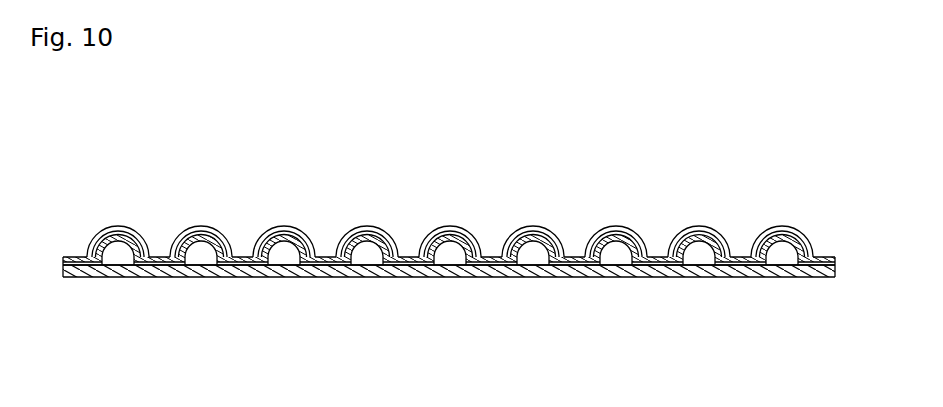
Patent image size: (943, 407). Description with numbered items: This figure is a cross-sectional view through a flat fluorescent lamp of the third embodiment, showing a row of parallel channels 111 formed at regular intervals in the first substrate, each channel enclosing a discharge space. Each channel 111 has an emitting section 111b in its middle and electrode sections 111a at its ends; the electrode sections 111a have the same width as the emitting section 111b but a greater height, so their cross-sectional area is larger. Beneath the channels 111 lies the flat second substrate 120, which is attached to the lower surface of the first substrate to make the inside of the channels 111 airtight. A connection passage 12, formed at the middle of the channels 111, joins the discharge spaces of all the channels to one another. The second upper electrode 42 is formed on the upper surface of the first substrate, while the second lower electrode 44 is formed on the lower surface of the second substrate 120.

The channels 111 is at (242, 181).
The electrode sections 111a is at (202, 228).
The emitting section 111b is at (281, 229).
The second upper electrode 42 is at (450, 235).
The second lower electrode 44 is at (219, 277).
The connection passage 12 is at (392, 265).
The second substrate 120 is at (518, 277).